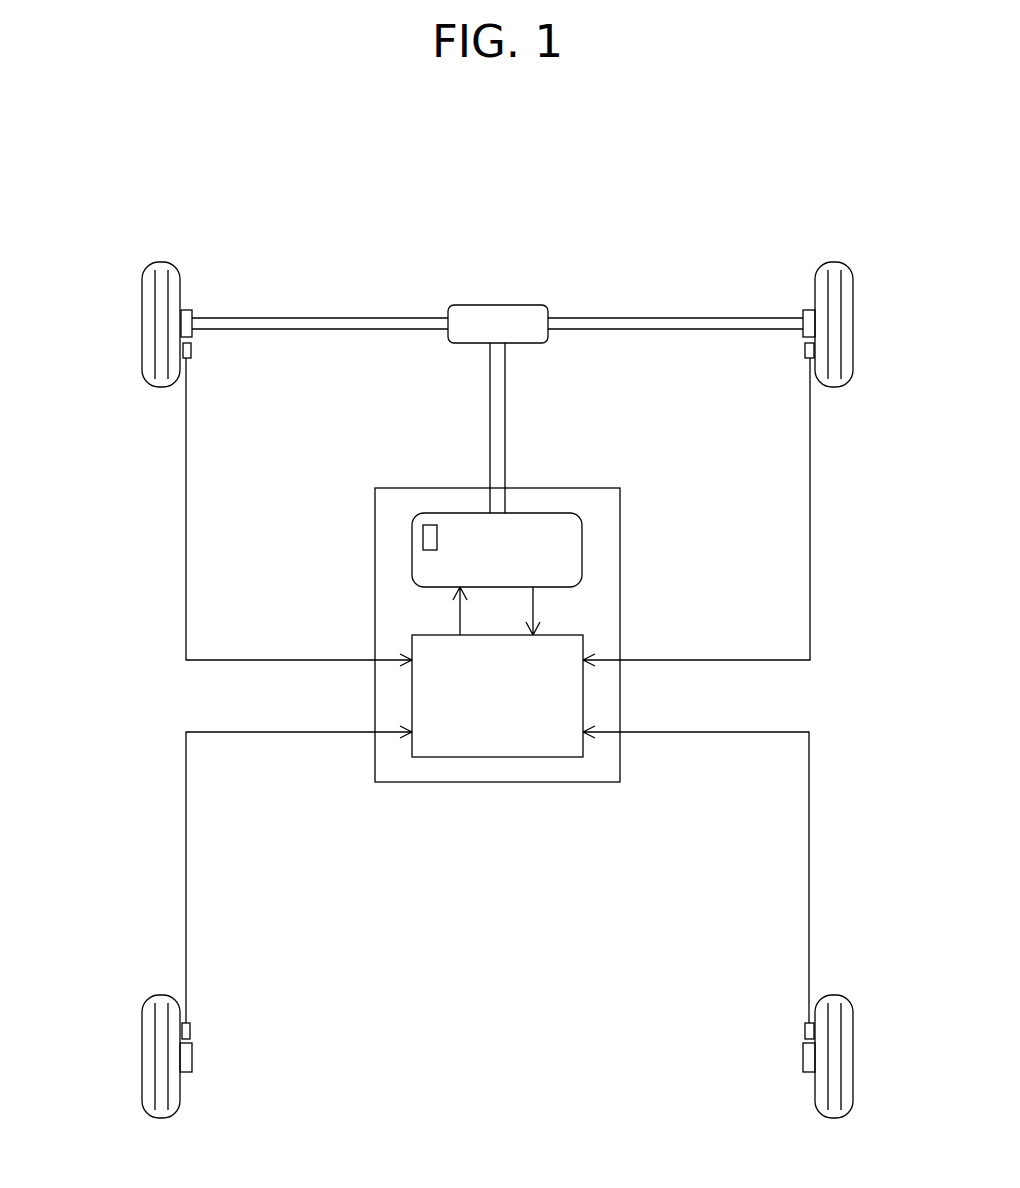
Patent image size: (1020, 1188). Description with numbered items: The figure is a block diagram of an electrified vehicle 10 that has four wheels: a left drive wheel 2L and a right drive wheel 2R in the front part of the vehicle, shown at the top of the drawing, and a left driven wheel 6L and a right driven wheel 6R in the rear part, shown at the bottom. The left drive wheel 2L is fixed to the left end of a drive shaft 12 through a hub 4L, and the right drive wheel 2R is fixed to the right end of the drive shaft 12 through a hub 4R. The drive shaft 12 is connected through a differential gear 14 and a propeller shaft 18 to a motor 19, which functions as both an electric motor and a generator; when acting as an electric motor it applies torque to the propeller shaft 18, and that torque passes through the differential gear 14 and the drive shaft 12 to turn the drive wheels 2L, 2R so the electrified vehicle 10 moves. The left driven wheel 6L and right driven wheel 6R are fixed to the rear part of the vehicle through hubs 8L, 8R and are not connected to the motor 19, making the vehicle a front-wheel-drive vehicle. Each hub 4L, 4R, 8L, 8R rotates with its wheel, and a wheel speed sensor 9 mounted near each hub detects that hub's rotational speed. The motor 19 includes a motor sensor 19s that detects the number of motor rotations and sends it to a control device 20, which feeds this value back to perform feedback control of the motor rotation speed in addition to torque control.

The electrified vehicle 10 is at (282, 190).
The left drive wheel 2L is at (135, 325).
The right drive wheel 2R is at (860, 323).
The hub 4L is at (183, 308).
The hub 4R is at (810, 308).
The left driven wheel 6L is at (138, 1057).
The right driven wheel 6R is at (858, 1057).
The hub 8L is at (185, 1072).
The hub 8R is at (810, 1072).
The wheel speed sensor 9 is at (192, 350).
The drive shaft 12 is at (672, 317).
The differential gear 14 is at (498, 305).
The propeller shaft 18 is at (508, 426).
The motor 19 is at (450, 513).
The motor sensor 19s is at (430, 522).
The control device 20 is at (460, 757).